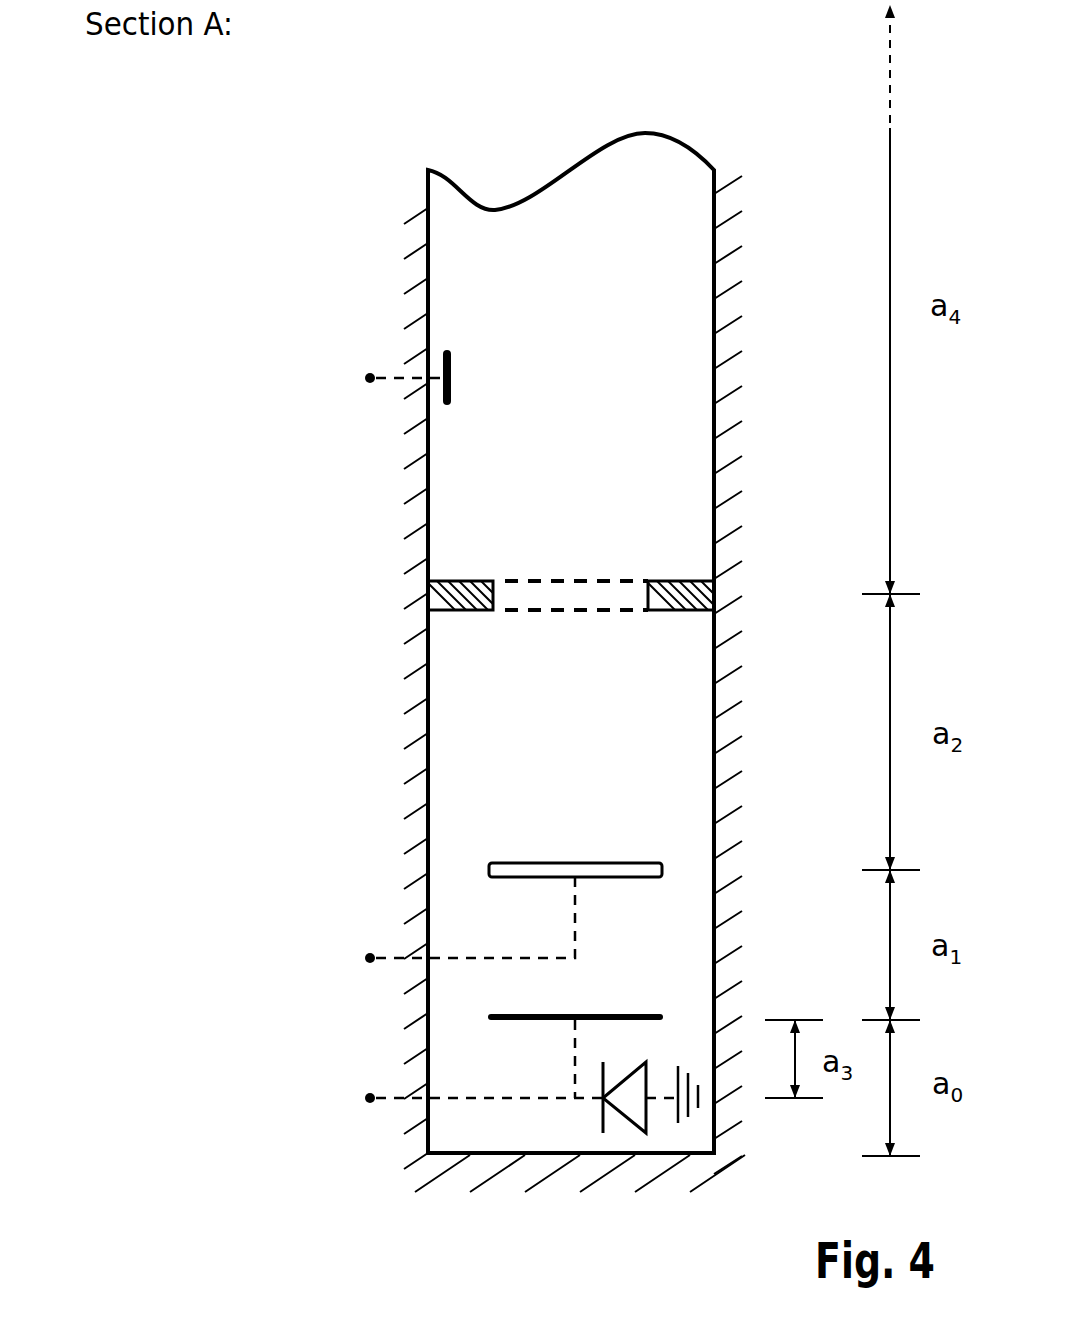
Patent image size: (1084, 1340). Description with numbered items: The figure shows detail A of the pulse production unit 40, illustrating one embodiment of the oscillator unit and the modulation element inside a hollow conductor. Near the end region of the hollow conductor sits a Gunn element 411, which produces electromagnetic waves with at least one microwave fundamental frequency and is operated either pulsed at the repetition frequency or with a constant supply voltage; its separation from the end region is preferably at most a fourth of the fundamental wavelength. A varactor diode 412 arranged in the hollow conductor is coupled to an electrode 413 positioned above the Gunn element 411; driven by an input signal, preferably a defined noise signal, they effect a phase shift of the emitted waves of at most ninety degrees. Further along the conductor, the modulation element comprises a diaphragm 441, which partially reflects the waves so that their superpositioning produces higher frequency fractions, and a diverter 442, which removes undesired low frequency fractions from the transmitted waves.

The pulse production unit 40 is at (270, 208).
The diverter 442 is at (442, 372).
The diaphragm 441 is at (428, 587).
The Gunn element 411 is at (490, 868).
The electrode 413 is at (492, 1016).
The varactor diode 412 is at (640, 1122).